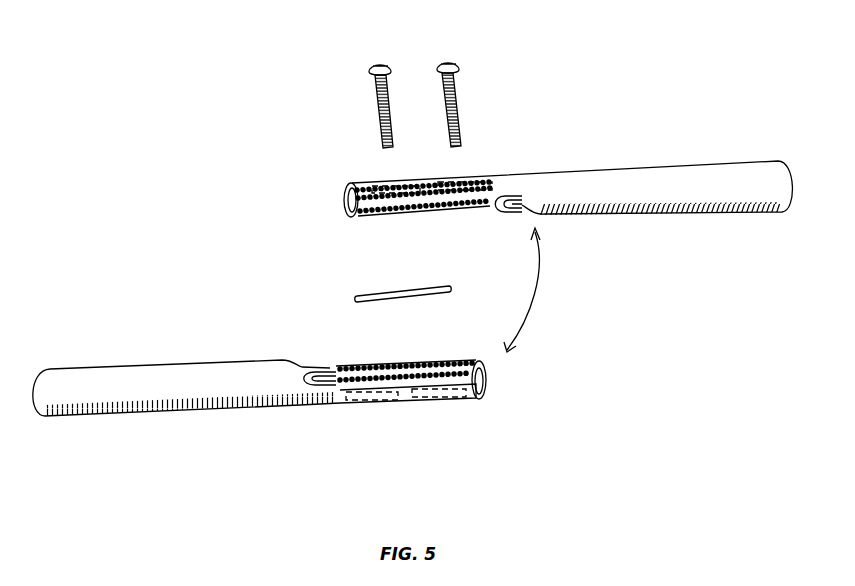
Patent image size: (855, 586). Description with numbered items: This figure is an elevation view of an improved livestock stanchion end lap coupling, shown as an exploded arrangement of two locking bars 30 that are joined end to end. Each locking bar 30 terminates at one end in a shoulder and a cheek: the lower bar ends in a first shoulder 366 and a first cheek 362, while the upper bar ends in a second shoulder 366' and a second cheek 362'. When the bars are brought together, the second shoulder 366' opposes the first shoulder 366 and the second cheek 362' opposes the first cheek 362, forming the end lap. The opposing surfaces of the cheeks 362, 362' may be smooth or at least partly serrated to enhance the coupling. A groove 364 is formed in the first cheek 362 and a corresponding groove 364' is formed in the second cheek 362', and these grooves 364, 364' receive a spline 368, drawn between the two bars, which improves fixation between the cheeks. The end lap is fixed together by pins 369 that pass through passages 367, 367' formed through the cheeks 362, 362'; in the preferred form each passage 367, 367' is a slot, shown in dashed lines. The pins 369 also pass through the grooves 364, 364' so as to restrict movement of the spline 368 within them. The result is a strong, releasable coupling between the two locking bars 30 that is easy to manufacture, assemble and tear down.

The locking bar 30 is at (630, 170).
The first cheek 362 is at (406, 359).
The second cheek 362' is at (417, 227).
The groove 364 is at (417, 358).
The groove 364' is at (406, 222).
The first shoulder 366 is at (326, 354).
The second shoulder 366' is at (502, 226).
The passage 367 is at (406, 419).
The passage 367' is at (436, 159).
The spline 368 is at (357, 296).
The pin 369 is at (445, 64).